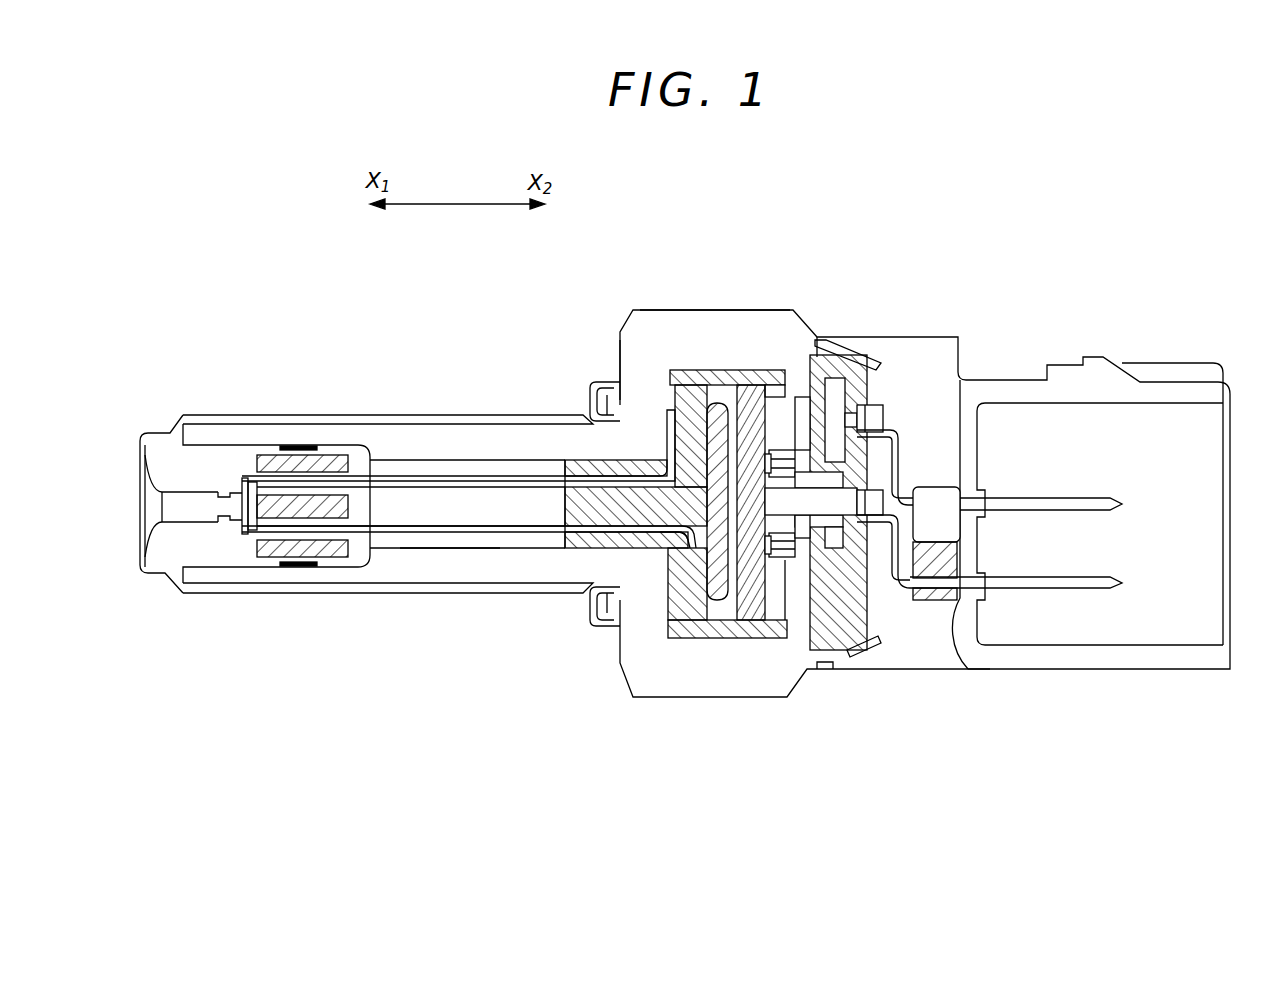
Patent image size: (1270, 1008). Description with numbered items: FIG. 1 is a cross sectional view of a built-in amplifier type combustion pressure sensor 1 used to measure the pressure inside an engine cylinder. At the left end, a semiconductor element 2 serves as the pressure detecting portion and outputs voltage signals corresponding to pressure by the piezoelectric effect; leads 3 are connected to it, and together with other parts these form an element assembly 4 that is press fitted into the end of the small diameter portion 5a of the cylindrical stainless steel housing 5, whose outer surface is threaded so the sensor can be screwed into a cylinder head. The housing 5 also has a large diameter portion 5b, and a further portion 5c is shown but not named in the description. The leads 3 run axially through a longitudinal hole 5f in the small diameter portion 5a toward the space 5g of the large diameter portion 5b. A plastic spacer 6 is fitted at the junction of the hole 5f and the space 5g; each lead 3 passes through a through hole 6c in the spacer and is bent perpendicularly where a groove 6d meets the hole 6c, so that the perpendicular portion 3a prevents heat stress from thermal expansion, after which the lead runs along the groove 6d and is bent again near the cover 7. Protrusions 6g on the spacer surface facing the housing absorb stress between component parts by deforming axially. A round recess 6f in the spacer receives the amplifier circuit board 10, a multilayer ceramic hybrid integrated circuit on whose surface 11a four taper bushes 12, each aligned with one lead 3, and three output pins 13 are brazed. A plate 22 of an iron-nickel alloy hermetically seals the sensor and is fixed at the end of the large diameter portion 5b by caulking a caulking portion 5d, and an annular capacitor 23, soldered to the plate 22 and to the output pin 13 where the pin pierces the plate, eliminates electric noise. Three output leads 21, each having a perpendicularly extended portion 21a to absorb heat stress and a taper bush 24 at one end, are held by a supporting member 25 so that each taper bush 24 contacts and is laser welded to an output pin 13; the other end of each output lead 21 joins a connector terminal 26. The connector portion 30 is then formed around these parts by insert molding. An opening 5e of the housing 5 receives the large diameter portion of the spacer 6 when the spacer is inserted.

The built-in amplifier type combustion pressure sensor 1 is at (1094, 221).
The semiconductor element 2 is at (243, 520).
The leads 3 is at (390, 552).
The perpendicular portion 3a is at (667, 546).
The element assembly 4 is at (150, 432).
The cylindrical housing 5 is at (697, 328).
The small diameter portion 5a is at (392, 440).
The large diameter portion 5b is at (760, 312).
The cylindrical tube portion 5c is at (290, 415).
The caulking portion 5d is at (872, 650).
The opening 5e is at (832, 607).
The longitudinal hole 5f is at (452, 543).
The space 5g is at (690, 640).
The spacer 6 is at (580, 462).
The through holes 6c is at (585, 542).
The grooves 6d is at (670, 628).
The round shaped recess 6f is at (818, 342).
The protrusions 6g is at (718, 450).
The cover 7 is at (618, 370).
The amplifier circuit board 10 is at (748, 640).
The surface 11a is at (782, 560).
The taper bushes 12 is at (795, 545).
The output pins 13 is at (815, 488).
The output leads 21 is at (900, 483).
The perpendicularly extended portion 21a is at (896, 478).
The plate 22 is at (834, 650).
The annular capacitor 23 is at (905, 408).
The taper bush 24 is at (886, 420).
The supporting member 25 is at (958, 666).
The connector terminal 26 is at (1037, 512).
The connector portion 30 is at (1132, 360).